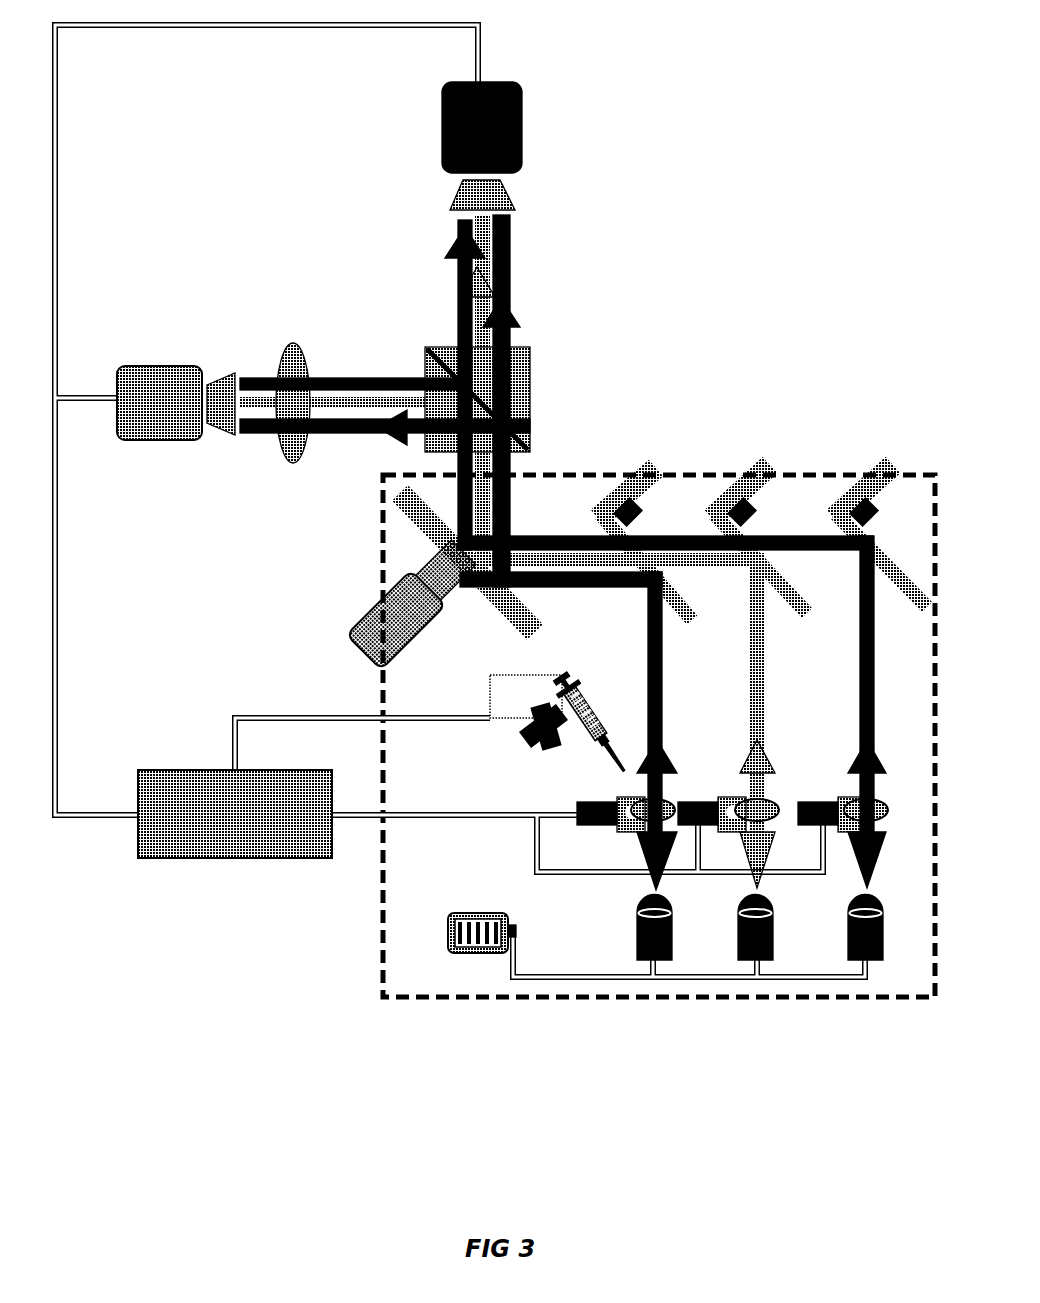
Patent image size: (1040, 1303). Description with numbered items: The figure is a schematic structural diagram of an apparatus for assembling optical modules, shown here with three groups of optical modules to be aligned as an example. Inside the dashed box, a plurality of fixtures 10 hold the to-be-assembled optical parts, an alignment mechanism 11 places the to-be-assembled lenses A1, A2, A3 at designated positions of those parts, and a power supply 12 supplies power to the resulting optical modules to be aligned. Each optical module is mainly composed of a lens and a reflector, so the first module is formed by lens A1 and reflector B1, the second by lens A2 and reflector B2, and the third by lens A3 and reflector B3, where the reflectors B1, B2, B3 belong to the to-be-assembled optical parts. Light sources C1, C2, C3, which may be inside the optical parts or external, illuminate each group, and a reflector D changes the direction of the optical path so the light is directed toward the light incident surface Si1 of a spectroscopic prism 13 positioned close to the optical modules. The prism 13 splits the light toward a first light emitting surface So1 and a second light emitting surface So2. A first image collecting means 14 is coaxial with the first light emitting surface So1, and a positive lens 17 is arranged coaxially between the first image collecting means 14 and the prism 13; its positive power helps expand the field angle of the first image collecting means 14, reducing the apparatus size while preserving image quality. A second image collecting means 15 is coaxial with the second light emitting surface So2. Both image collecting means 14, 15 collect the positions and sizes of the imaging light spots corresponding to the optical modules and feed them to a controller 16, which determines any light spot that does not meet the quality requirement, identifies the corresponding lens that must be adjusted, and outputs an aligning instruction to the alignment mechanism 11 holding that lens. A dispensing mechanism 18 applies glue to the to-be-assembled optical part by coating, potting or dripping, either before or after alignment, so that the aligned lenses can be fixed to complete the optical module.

The fixture 10 is at (362, 600).
The alignment mechanism 11 is at (580, 802).
The power supply 12 is at (470, 905).
The spectroscopic prism 13 is at (523, 347).
The first image collecting means 14 is at (150, 366).
The second image collecting means 15 is at (510, 82).
The controller 16 is at (215, 770).
The positive lens 17 is at (293, 343).
The dispensing mechanism 18 is at (475, 705).
The first light emitting surface So1 is at (425, 372).
The second light emitting surface So2 is at (428, 347).
The light incident surface Si1 is at (430, 452).
The reflector D is at (545, 618).
The reflector of to-be-assembled optical part B1 is at (600, 505).
The reflector of to-be-assembled optical part B2 is at (707, 505).
The reflector of to-be-assembled optical part B3 is at (830, 505).
The to-be-assembled lens A1 is at (665, 790).
The to-be-assembled lens A2 is at (767, 790).
The to-be-assembled lens A3 is at (880, 790).
The light source C1 is at (675, 935).
The light source C2 is at (778, 935).
The light source C3 is at (888, 935).